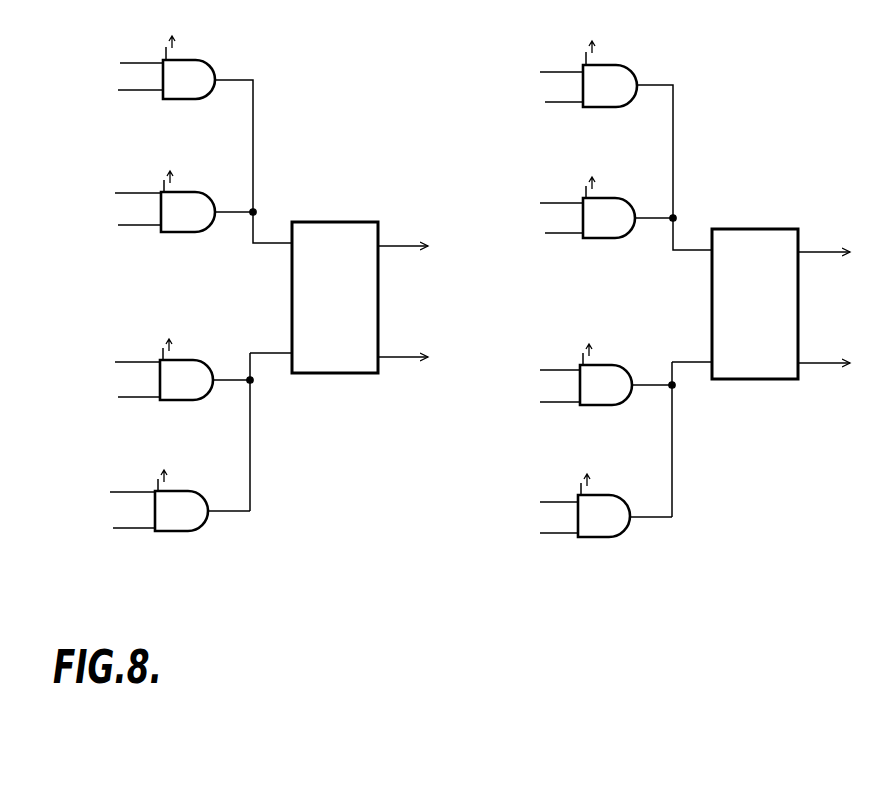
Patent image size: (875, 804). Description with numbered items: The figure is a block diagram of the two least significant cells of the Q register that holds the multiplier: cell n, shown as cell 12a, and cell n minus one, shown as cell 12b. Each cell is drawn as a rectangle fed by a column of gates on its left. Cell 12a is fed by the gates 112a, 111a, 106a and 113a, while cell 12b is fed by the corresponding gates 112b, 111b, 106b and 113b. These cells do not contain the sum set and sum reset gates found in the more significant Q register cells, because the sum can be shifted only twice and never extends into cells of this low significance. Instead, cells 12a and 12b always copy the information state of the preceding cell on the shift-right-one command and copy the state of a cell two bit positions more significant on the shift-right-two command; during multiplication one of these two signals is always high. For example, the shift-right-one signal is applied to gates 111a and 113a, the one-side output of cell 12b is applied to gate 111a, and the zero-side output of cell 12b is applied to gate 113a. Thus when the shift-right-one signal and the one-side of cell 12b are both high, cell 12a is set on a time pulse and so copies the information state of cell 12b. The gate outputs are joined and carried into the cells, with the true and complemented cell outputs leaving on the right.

The AND gate (SHR 2, Q(n-3)) 112b is at (205, 60).
The AND gate (SHR 1, Q(n-2)) 111b is at (196, 192).
The cell n-1 12b is at (324, 222).
The AND gate (SHR 2, Q(n-3)*) 106b is at (192, 360).
The AND gate (SHR 1, Q(n-2)*) 113b is at (186, 491).
The AND gate (SHR 2, Q(n-2)) 112a is at (626, 67).
The gate 111a is at (617, 198).
The cell n 12a is at (738, 229).
The AND gate (SHR(2), Q(n-2)*) 106a is at (613, 365).
The gate 113a is at (610, 495).